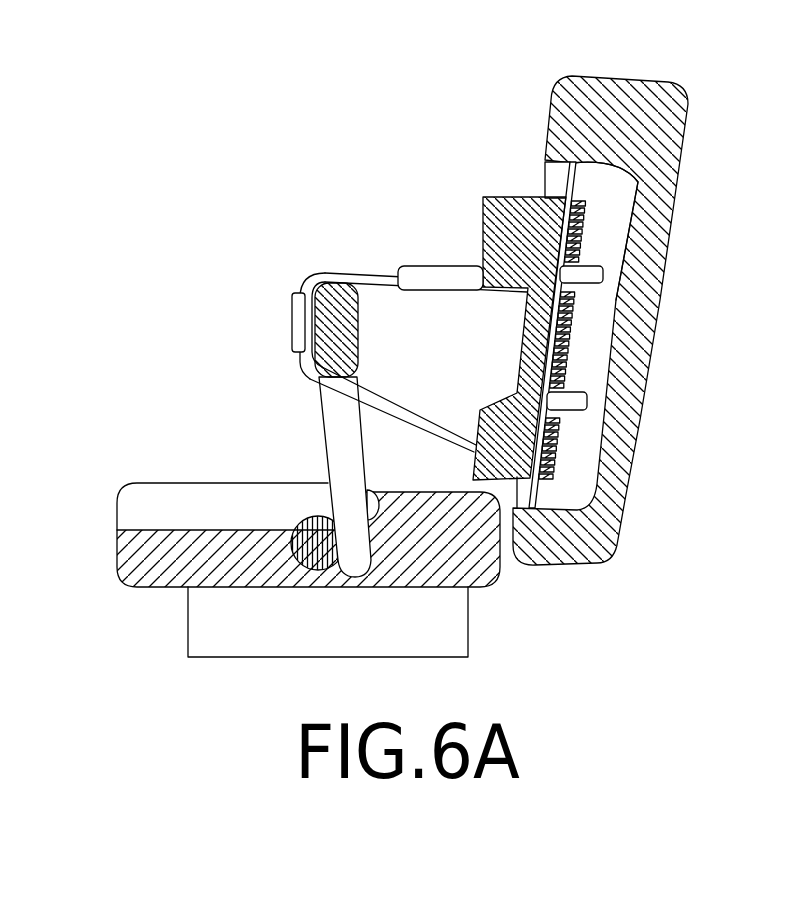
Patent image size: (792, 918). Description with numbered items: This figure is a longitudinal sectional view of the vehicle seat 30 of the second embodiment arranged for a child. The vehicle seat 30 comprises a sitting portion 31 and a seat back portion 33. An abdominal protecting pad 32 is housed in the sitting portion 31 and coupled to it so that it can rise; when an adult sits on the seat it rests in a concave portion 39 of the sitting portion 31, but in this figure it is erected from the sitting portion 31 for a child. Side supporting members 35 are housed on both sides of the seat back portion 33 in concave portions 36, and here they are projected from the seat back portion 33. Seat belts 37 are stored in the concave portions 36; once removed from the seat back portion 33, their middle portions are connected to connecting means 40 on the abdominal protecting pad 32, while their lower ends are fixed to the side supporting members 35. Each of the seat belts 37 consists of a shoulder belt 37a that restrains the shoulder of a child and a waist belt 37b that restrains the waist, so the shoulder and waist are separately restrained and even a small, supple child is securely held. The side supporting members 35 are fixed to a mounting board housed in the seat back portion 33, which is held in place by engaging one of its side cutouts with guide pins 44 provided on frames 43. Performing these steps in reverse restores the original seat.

The vehicle seat 30 is at (342, 201).
The sitting portion 31 is at (291, 403).
The abdominal protecting pad 32 is at (318, 287).
The seat back portion 33 is at (548, 108).
The side supporting members 35 is at (511, 443).
The concave portions 36 is at (544, 176).
The seat belts 37 is at (338, 256).
The shoulder belt 37a is at (425, 265).
The waist belt 37b is at (391, 405).
The concave portion 39 is at (156, 494).
The connecting means 40 is at (292, 330).
The frames 43 is at (639, 180).
The guide pins 44 is at (604, 276).